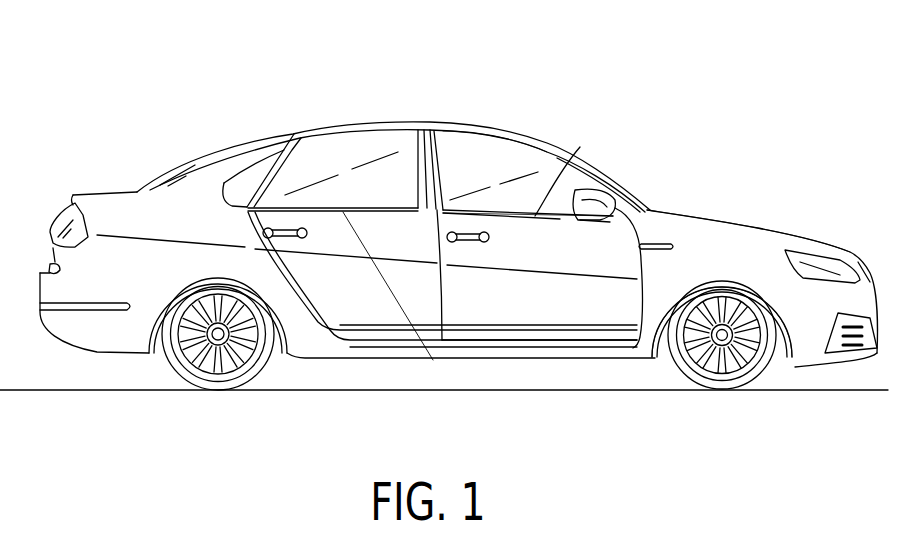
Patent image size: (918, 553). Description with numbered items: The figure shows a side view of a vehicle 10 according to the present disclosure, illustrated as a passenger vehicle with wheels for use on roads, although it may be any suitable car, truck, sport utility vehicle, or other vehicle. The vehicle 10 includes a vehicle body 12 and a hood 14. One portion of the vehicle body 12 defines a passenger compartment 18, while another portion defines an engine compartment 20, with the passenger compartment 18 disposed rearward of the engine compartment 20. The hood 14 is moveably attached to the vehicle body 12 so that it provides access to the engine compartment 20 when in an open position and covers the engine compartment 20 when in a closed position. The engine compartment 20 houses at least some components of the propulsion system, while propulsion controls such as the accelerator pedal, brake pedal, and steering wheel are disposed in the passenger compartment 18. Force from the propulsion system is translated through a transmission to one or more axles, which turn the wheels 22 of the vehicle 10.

The vehicle 10 is at (102, 84).
The vehicle body 12 is at (538, 247).
The hood 14 is at (768, 225).
The passenger compartment 18 is at (473, 155).
The engine compartment 20 is at (712, 235).
The wheels 22 is at (667, 339).